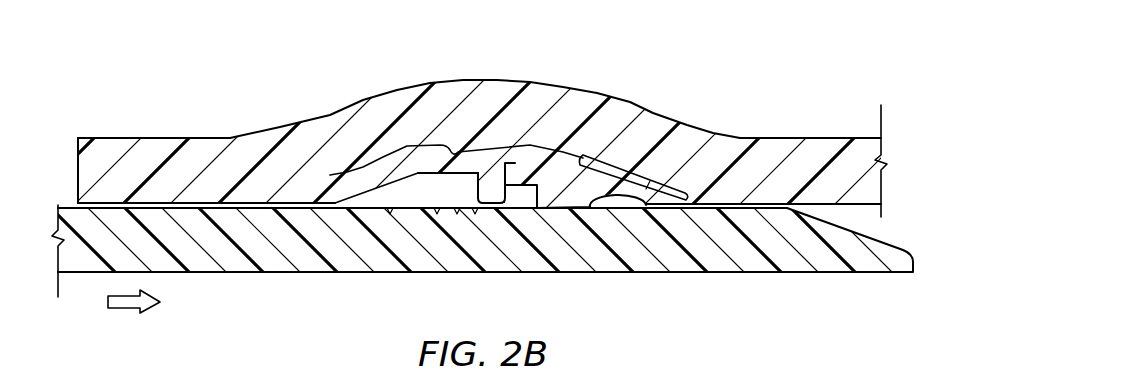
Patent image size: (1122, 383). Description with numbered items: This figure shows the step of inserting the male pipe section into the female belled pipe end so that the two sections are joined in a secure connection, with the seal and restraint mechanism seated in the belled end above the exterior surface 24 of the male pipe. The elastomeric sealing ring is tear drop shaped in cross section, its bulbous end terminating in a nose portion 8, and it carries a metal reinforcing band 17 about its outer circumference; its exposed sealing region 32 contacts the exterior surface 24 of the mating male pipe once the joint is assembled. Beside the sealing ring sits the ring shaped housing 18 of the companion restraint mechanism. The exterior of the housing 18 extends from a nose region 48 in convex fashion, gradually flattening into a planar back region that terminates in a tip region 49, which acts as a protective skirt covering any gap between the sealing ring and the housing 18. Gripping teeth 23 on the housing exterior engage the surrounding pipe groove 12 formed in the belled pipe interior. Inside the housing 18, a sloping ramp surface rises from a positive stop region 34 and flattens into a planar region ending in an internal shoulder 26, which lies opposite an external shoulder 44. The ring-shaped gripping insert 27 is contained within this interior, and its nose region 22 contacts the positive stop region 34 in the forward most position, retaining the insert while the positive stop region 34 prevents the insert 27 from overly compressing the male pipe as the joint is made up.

The nose portion 8 is at (493, 190).
The pipe groove 12 is at (443, 160).
The metal reinforcing band 17 is at (663, 178).
The ring shaped housing 18 is at (403, 148).
The nose region 22 is at (378, 192).
The gripping teeth 23 is at (345, 135).
The exterior surface 24 is at (223, 136).
The internal shoulder 26 is at (474, 205).
The gripping ring insert 27 is at (440, 210).
The exposed sealing region 32 is at (567, 205).
The positive stop region 34 is at (355, 208).
The external shoulder 44 is at (511, 197).
The nose region 48 is at (280, 135).
The tip region 49 is at (583, 152).